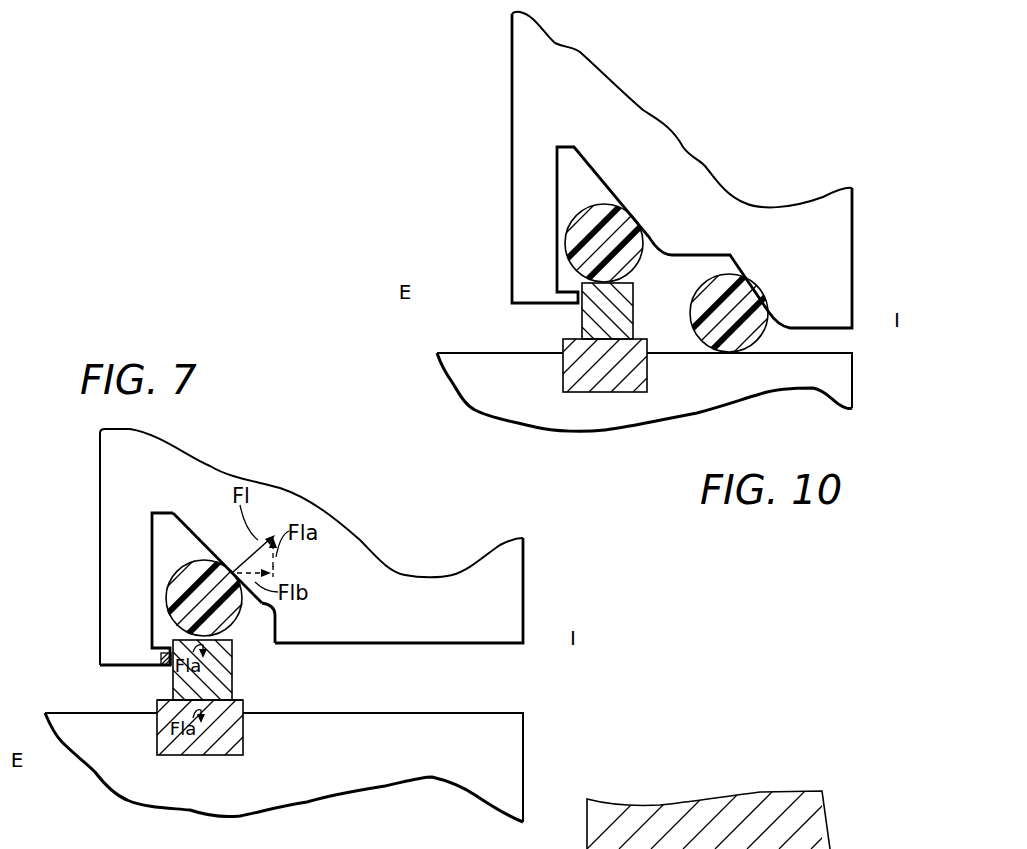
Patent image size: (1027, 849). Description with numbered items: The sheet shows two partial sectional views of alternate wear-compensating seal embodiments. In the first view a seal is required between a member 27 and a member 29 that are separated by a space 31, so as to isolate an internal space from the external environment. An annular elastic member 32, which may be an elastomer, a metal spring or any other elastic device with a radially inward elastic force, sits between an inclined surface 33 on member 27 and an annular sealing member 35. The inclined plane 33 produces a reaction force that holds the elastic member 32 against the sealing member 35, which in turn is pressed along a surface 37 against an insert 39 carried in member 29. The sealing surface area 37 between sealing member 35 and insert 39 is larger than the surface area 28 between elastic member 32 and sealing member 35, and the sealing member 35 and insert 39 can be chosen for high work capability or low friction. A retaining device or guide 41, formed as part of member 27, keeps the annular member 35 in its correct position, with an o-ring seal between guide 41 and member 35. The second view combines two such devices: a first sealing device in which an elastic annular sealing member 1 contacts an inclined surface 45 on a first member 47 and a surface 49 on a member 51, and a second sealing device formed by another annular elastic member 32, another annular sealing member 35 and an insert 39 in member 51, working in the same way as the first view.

In FIG. 10, the elastic annular sealing member 1 is at (698, 291).
In FIG. 7, the member 27 is at (358, 540).
In FIG. 7, the surface area 28 is at (228, 634).
In FIG. 7, the member 29 is at (397, 788).
In FIG. 7, the space 31 is at (387, 700).
In FIG. 7, the annular elastic member 32 is at (188, 565).
In FIG. 7, the inclined surface 33 is at (208, 544).
In FIG. 7, the annular sealing member 35 is at (233, 668).
In FIG. 10, the annular sealing member 35 is at (582, 318).
In FIG. 7, the surface 37 is at (243, 700).
In FIG. 7, the insert 39 is at (212, 757).
In FIG. 10, the insert 39 is at (563, 383).
In FIG. 7, the retaining device or guide 41 is at (160, 661).
In FIG. 10, the inclined surface 45 is at (682, 171).
In FIG. 10, the first member 47 is at (708, 162).
In FIG. 10, the surface 49 is at (772, 353).
In FIG. 10, the member 51 is at (787, 393).